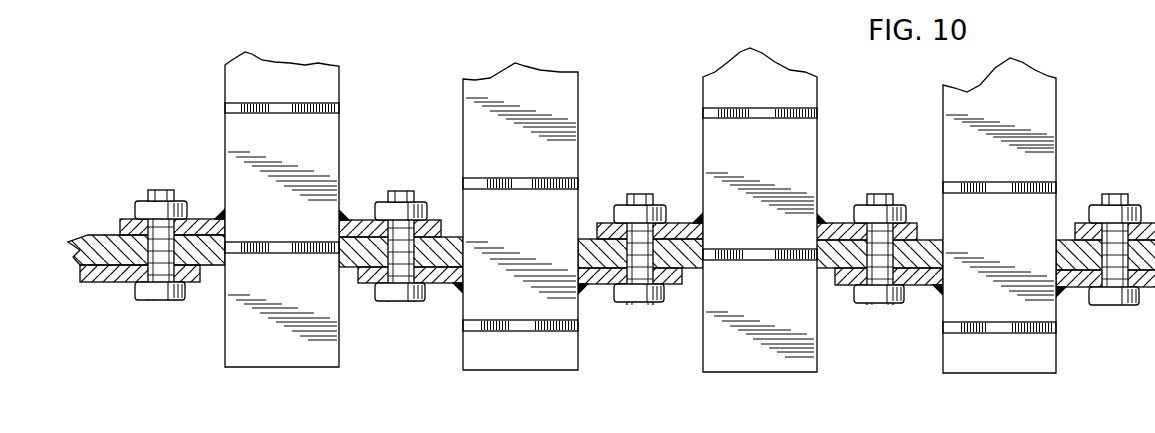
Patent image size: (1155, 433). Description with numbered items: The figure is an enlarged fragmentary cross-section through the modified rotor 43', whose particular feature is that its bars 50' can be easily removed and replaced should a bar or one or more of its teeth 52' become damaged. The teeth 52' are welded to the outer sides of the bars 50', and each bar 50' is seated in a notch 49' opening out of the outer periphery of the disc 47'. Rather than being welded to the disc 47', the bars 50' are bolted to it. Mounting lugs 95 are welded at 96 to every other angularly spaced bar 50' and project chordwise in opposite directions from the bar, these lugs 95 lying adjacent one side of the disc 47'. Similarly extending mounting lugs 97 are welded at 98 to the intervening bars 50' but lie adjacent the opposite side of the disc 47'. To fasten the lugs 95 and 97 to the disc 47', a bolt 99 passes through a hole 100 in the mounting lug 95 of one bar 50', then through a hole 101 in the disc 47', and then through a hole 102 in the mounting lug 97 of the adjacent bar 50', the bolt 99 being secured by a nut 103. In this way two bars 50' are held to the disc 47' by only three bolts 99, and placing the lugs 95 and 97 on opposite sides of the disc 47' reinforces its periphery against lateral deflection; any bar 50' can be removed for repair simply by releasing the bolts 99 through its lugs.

The modified rotor 43' is at (662, 120).
The disc 47' is at (385, 291).
The notch 49' is at (959, 207).
The bar 50' is at (670, 197).
The tooth 52' is at (640, 208).
The mounting lug 95 is at (437, 278).
The weld 96 is at (937, 292).
The mounting lug 97 is at (363, 222).
The weld 98 is at (704, 215).
The bolt 99 is at (395, 300).
The hole 100 is at (874, 293).
The hole 101 is at (893, 262).
The hole 102 is at (887, 210).
The nut 103 is at (871, 214).